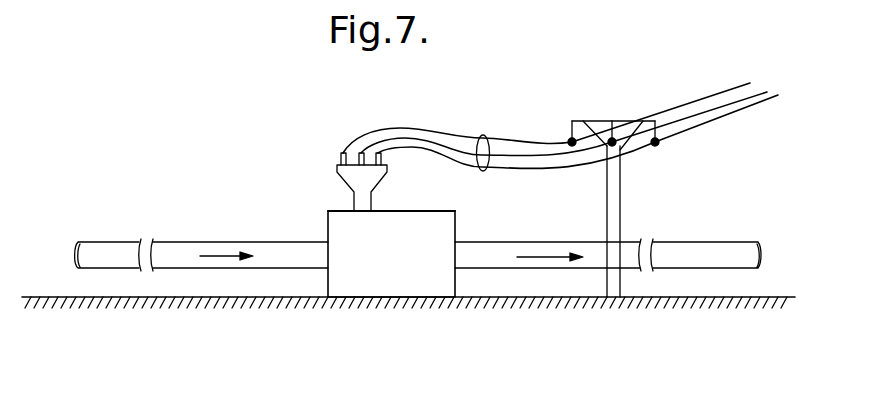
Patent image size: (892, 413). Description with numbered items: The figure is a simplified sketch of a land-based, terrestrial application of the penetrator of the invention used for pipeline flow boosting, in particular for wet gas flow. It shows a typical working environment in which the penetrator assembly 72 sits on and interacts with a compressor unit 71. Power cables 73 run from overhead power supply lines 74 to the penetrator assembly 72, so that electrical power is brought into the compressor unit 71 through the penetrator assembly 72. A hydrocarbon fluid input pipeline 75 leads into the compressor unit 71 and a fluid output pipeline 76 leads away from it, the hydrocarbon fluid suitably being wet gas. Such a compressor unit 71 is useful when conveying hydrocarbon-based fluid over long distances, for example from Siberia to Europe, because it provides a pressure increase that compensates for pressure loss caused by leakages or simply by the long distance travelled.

The compressor unit 71 is at (391, 254).
The penetrator assembly 72 is at (343, 180).
The power cables 73 is at (483, 135).
The power supply lines 74 is at (722, 126).
The hydrocarbon fluid input pipeline 75 is at (199, 247).
The fluid output pipeline 76 is at (670, 242).